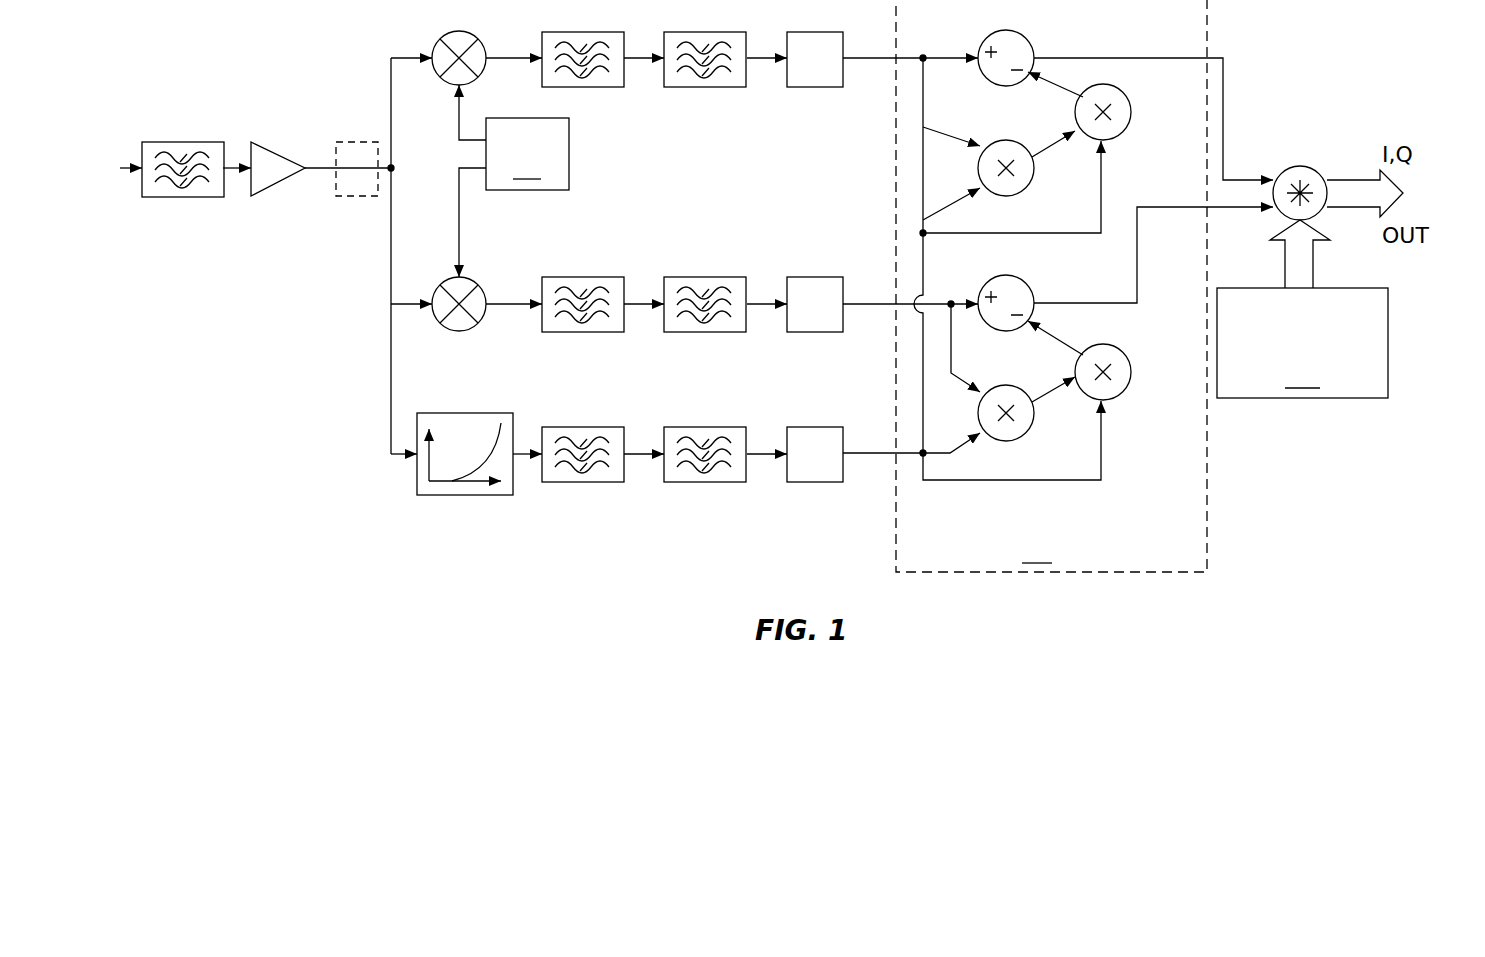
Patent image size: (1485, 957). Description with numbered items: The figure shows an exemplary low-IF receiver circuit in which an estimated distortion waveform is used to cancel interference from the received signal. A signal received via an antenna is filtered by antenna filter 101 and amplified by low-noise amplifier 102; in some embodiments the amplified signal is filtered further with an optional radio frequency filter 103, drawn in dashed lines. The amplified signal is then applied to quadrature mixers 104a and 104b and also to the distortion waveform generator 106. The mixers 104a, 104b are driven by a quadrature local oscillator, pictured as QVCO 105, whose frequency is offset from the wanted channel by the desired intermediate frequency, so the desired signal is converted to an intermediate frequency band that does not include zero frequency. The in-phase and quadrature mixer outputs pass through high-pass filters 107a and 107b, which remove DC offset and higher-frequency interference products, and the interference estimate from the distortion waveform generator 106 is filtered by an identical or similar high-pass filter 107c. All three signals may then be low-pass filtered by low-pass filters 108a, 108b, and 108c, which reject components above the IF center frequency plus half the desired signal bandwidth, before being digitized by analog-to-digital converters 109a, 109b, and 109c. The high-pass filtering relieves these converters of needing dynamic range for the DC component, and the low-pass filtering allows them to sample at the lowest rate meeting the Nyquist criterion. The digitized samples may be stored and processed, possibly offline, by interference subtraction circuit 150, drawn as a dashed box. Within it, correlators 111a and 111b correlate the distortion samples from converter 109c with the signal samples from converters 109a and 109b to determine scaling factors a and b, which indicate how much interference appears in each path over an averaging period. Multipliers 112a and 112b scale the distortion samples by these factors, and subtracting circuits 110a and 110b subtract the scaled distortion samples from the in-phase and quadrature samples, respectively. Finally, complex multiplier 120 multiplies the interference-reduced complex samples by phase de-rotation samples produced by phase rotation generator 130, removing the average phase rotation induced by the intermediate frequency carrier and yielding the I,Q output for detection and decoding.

The antenna filter 101 is at (198, 142).
The low-noise amplifier 102 is at (266, 150).
The radio frequency filter 103 is at (364, 197).
The quadrature mixer 104a is at (469, 34).
The quadrature mixer 104b is at (468, 280).
The QVCO 105 is at (514, 181).
The distortion waveform generator 106 is at (467, 500).
The high-pass filter 107a is at (596, 32).
The high-pass filter 107b is at (596, 277).
The high-pass filter 107c is at (596, 427).
The low-pass filter 108a is at (718, 32).
The low-pass filter 108b is at (718, 277).
The low-pass filter 108c is at (718, 427).
The analog-to-digital converter 109a is at (816, 32).
The analog-to-digital converter 109b is at (816, 277).
The analog-to-digital converter 109c is at (816, 427).
The subtracting circuit 110a is at (1022, 31).
The subtracting circuit 110b is at (1022, 277).
The correlator 111a is at (1004, 140).
The correlator 111b is at (1004, 385).
The multiplier 112a is at (1123, 91).
The multiplier 112b is at (1123, 346).
The complex multiplier 120 is at (1303, 167).
The phase rotation generator 130 is at (1302, 309).
The interference subtraction circuit 150 is at (1051, 286).